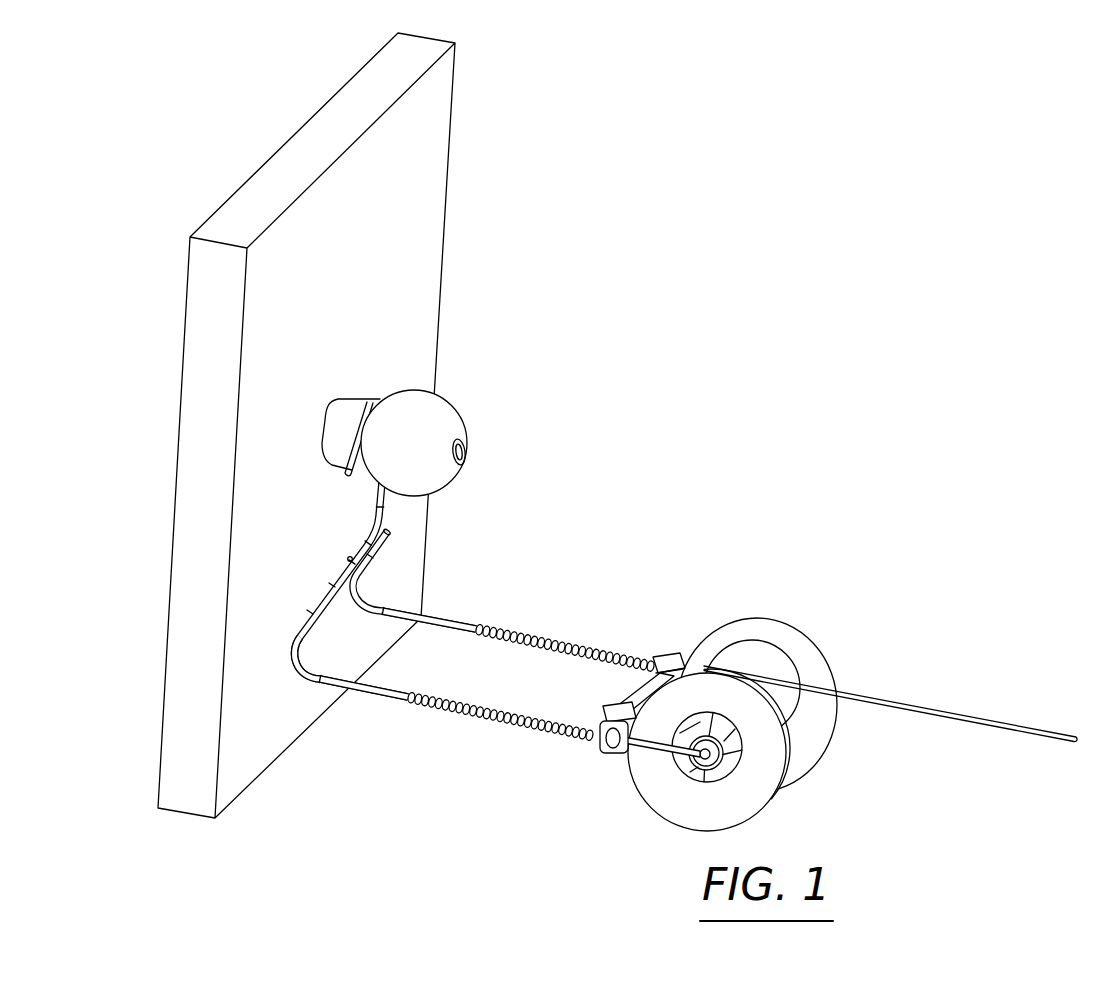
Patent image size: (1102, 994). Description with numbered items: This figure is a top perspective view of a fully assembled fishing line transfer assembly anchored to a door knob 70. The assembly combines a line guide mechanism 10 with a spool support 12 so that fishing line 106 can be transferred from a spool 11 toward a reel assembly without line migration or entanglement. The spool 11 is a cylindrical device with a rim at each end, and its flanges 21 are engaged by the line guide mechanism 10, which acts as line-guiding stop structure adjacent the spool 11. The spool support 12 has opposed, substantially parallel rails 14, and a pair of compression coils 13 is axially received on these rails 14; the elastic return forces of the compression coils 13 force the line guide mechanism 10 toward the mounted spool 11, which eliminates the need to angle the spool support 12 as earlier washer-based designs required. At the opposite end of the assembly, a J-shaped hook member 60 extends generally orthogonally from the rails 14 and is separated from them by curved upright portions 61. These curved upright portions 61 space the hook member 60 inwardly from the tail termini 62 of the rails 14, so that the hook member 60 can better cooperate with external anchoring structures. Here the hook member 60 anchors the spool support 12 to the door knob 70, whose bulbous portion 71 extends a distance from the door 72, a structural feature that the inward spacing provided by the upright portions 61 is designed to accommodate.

The door 72 is at (290, 436).
The J-shaped hook member 60 is at (369, 397).
The door knob 70 is at (447, 415).
The bulbous portion 71 is at (446, 478).
The curved upright portions 61 is at (309, 607).
The tail termini 62 is at (387, 606).
The spool support 12 is at (297, 670).
The parallel rails 14 is at (452, 622).
The compression coils 13 is at (575, 641).
The line guide mechanism 10 is at (673, 652).
The spool 11 is at (751, 717).
The flanges 21 is at (828, 747).
The fishing line 106 is at (973, 715).